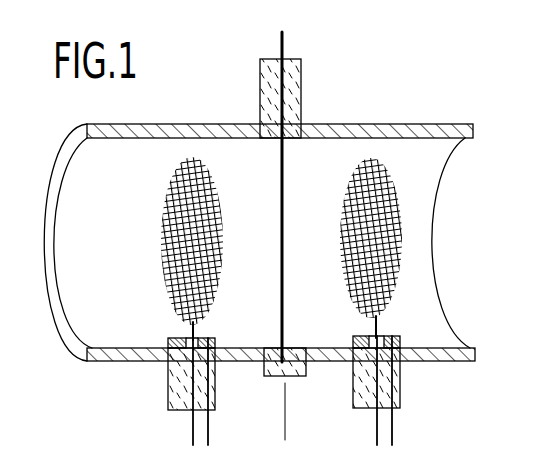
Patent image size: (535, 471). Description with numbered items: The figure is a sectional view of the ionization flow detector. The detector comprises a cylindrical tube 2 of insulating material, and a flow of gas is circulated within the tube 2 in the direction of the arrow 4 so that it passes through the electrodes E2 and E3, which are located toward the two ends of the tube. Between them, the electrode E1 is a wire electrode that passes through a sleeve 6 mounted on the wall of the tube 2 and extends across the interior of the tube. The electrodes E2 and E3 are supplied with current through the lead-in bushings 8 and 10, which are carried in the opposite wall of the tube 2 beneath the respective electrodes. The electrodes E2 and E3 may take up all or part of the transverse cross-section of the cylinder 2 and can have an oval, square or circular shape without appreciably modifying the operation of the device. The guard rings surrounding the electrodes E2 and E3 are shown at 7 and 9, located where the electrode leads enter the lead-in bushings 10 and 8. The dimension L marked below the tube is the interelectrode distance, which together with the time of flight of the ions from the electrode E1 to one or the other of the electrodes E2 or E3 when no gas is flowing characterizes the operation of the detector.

The cylindrical tube 2 is at (373, 121).
The arrow 4 is at (150, 292).
The sleeve 6 is at (290, 92).
The guard ring 7 is at (208, 335).
The lead-in bushing 8 is at (385, 387).
The guard ring 9 is at (400, 337).
The lead-in bushing 10 is at (175, 381).
The wire electrode E1 is at (281, 226).
The electrode E2 is at (163, 235).
The electrode E3 is at (402, 242).
The interelectrode distance L is at (375, 438).